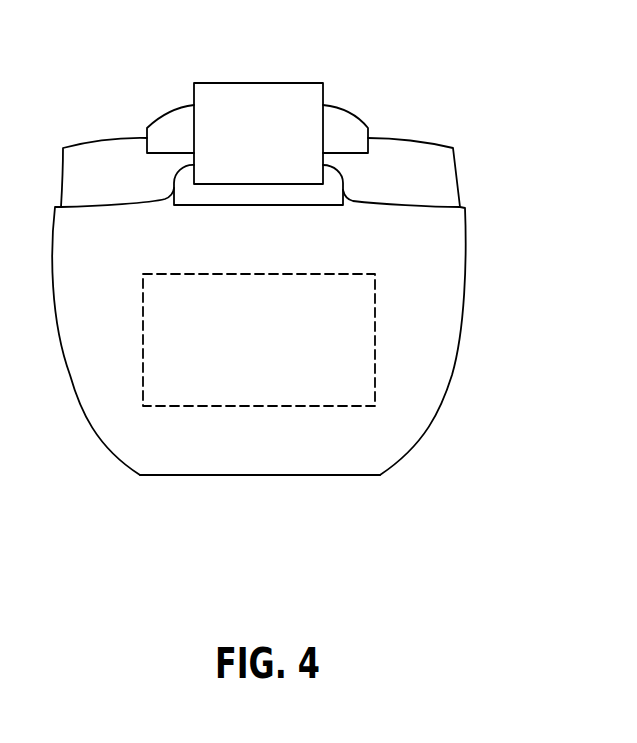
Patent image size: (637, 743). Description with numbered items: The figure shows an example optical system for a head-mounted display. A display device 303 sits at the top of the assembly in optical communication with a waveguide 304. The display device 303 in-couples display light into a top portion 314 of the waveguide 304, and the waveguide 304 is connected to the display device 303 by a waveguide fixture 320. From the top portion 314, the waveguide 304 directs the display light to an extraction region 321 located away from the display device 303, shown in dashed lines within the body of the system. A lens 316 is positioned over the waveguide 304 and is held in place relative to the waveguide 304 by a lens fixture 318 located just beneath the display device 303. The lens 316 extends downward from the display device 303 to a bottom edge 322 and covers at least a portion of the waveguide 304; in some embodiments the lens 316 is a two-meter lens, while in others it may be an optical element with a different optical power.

The display device 303 is at (302, 92).
The waveguide 304 is at (435, 158).
The top portion of the waveguide 314 is at (80, 143).
The lens 316 is at (432, 317).
The lens fixture 318 is at (328, 193).
The waveguide fixture 320 is at (168, 132).
The extraction region 321 is at (365, 380).
The bottom edge 322 is at (260, 477).